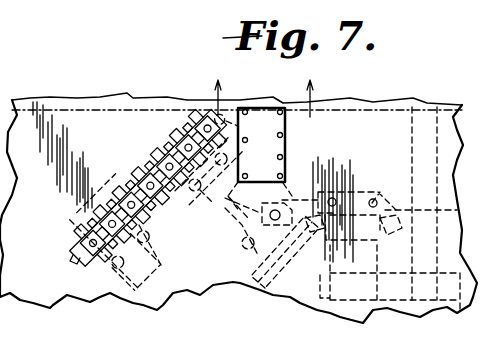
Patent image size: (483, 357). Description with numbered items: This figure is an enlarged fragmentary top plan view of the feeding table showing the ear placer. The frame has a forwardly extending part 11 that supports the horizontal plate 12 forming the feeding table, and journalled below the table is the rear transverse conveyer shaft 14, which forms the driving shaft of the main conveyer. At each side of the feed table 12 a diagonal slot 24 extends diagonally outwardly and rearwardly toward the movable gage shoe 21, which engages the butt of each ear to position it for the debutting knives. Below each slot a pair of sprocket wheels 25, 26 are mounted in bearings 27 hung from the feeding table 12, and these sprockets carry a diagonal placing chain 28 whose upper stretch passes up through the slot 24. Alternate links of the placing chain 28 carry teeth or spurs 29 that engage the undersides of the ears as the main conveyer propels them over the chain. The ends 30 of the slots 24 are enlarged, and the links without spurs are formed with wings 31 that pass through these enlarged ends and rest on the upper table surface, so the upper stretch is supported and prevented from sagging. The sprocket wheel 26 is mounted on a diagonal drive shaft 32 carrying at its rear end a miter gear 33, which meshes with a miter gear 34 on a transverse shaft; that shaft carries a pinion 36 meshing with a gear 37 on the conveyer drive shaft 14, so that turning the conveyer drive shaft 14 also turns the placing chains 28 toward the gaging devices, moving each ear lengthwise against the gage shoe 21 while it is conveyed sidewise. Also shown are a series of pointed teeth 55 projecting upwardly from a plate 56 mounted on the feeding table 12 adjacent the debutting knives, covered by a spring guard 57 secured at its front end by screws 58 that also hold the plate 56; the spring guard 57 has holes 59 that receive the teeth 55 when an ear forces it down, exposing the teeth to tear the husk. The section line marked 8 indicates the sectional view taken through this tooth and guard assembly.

The section line 8- 8 is at (262, 89).
The forwardly extending part 11 is at (30, 96).
The horizontal plate 12 is at (408, 203).
The conveyer shaft 14 is at (412, 182).
The gage shoe 21 is at (233, 212).
The diagonal slot 24 is at (151, 189).
The sprocket wheel 25 is at (80, 260).
The sprocket wheel 26 is at (240, 128).
The bearings 27 is at (163, 261).
The diagonal placing chain 28 is at (150, 179).
The teeth or spurs 29 is at (185, 147).
The ends of the slots 30 is at (72, 248).
The wings 31 is at (130, 183).
The diagonal drive shaft 32 is at (258, 220).
The miter gear 33 is at (259, 284).
The miter gear 34 is at (406, 233).
The pinion 36 is at (320, 277).
The gear 37 is at (457, 310).
The pointed teeth 55 is at (285, 132).
The plate 56 is at (284, 178).
The spring guard 57 is at (278, 182).
The screws 58 is at (212, 190).
The holes 59 is at (285, 170).